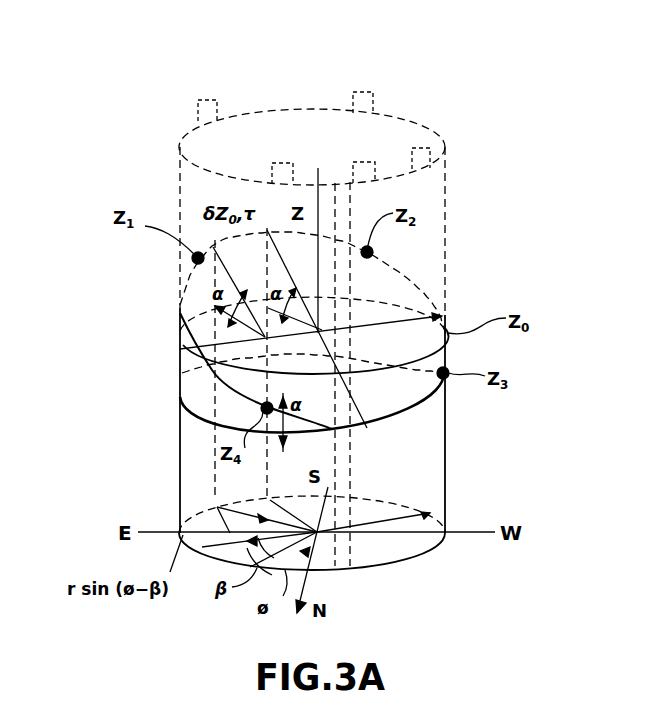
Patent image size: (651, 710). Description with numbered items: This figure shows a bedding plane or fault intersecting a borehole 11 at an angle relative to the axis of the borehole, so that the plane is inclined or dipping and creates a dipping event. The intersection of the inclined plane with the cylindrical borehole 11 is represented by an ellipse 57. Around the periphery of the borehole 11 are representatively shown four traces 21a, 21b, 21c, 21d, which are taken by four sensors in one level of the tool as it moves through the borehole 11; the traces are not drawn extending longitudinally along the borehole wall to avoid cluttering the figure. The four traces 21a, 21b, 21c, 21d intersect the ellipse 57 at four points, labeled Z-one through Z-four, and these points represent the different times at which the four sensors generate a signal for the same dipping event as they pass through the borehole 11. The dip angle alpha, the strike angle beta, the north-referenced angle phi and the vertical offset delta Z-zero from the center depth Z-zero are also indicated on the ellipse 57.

The borehole 11 is at (412, 123).
The trace 21a is at (208, 99).
The trace 21b is at (357, 93).
The trace 21c is at (430, 163).
The trace 21d is at (287, 165).
The ellipse 57 is at (414, 282).